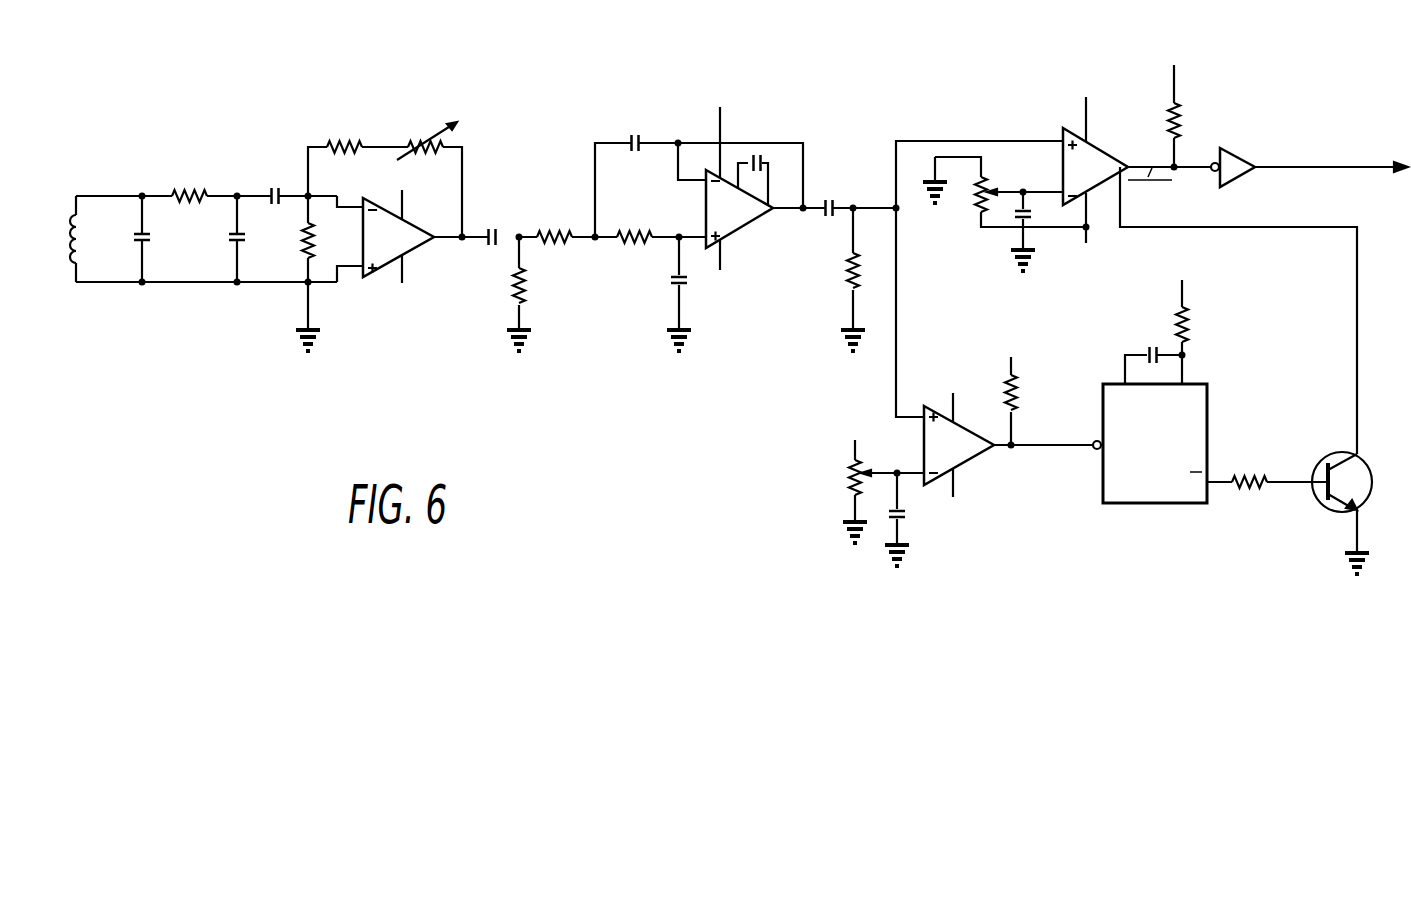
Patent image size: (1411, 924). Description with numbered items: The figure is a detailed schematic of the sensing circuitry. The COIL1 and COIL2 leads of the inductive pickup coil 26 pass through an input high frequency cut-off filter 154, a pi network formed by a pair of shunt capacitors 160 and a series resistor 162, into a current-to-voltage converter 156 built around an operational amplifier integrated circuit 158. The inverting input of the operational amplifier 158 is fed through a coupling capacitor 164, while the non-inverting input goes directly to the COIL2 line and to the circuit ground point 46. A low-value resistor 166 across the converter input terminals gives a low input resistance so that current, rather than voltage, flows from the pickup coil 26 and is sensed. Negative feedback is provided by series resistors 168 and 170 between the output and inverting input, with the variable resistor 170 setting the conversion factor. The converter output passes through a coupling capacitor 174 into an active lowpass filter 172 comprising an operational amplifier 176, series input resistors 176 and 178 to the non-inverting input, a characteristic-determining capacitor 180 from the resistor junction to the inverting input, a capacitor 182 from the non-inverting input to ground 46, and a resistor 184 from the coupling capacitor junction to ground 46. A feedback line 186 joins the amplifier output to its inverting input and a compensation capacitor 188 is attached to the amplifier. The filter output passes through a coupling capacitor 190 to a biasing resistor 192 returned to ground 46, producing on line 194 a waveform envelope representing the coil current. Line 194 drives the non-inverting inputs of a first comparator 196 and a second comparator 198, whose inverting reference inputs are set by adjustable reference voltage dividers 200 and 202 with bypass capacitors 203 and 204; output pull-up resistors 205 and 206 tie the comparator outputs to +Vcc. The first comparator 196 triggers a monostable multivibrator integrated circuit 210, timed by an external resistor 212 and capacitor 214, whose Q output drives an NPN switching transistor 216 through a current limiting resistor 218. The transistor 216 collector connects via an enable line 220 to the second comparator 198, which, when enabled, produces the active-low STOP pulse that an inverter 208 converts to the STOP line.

The inductive pickup coil 26 is at (70, 222).
The circuit ground point 46 is at (299, 332).
The input high frequency cut-off filter 154 is at (226, 154).
The current-to-voltage converter 156 is at (376, 98).
The operational amplifier integrated circuit 158 is at (378, 282).
The shunt capacitors 160 is at (227, 238).
The series resistor 162 is at (179, 191).
The coupling capacitor 164 is at (271, 192).
The resistor 166 is at (302, 241).
The series feedback resistor 168 is at (345, 135).
The variable feedback resistor 170 is at (421, 135).
The active lowpass filter 172 is at (664, 98).
The coupling capacitor 174 is at (498, 210).
The operational amplifier 176 is at (563, 210).
The series input resistor 178 is at (640, 228).
The characteristic-determining capacitor 180 is at (639, 135).
The capacitor 182 is at (673, 283).
The resistor 184 is at (515, 284).
The feedback line 186 is at (780, 143).
The compensation capacitor 188 is at (763, 163).
The coupling capacitor 190 is at (848, 190).
The biasing resistor 192 is at (848, 273).
The line 194 is at (896, 162).
The first comparator 196 is at (974, 456).
The second comparator 198 is at (1071, 116).
The adjustable reference voltage divider 200 is at (850, 482).
The adjustable reference voltage divider 202 is at (983, 212).
The bypass capacitor 203 is at (904, 516).
The bypass capacitor 204 is at (1027, 205).
The output pull-up resistor 205 is at (1021, 401).
The output pull-up resistor 206 is at (1180, 130).
The inverter 208 is at (1243, 161).
The monostable multivibrator integrated circuit 210 is at (1207, 402).
The external resistor 212 is at (1190, 332).
The external capacitor 214 is at (1151, 337).
The NPN switching transistor 216 is at (1332, 456).
The current limiting resistor 218 is at (1257, 478).
The enable line 220 is at (1357, 276).